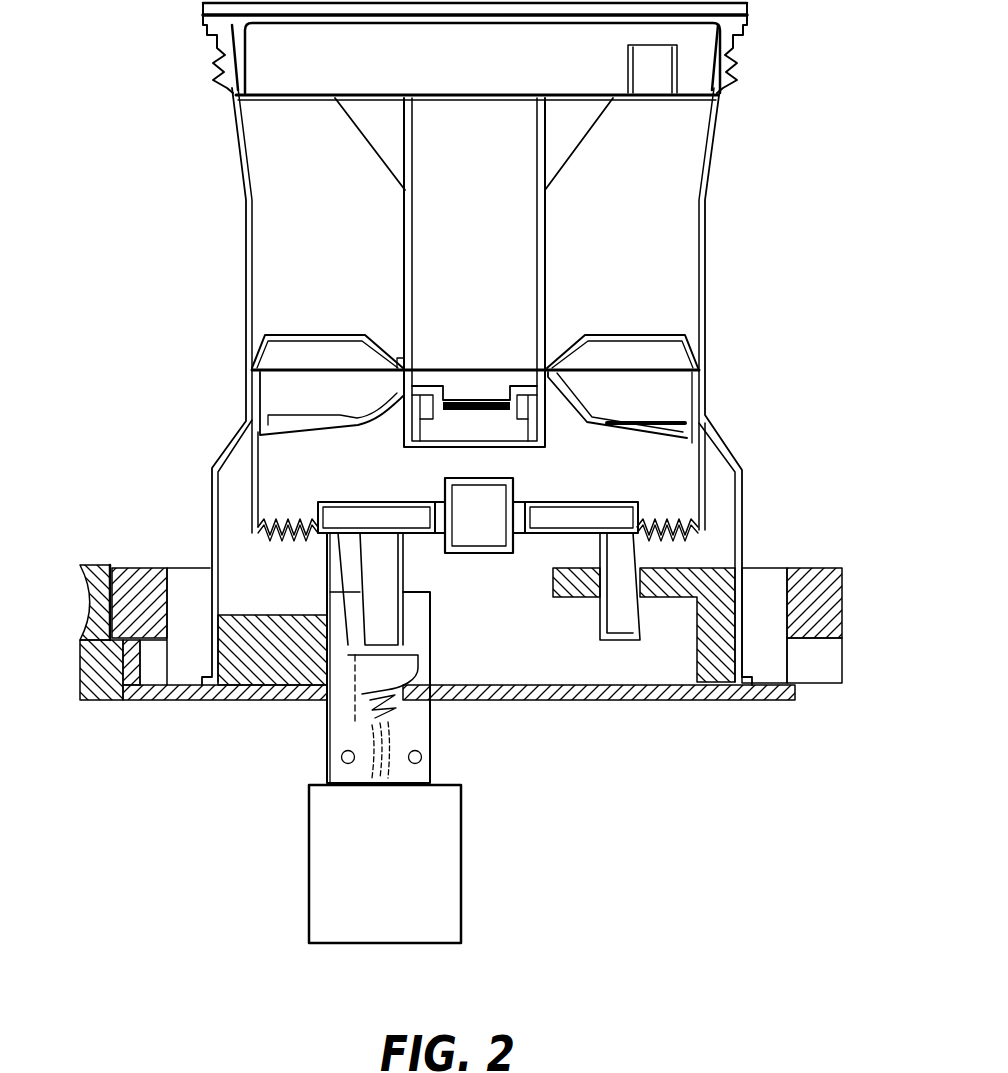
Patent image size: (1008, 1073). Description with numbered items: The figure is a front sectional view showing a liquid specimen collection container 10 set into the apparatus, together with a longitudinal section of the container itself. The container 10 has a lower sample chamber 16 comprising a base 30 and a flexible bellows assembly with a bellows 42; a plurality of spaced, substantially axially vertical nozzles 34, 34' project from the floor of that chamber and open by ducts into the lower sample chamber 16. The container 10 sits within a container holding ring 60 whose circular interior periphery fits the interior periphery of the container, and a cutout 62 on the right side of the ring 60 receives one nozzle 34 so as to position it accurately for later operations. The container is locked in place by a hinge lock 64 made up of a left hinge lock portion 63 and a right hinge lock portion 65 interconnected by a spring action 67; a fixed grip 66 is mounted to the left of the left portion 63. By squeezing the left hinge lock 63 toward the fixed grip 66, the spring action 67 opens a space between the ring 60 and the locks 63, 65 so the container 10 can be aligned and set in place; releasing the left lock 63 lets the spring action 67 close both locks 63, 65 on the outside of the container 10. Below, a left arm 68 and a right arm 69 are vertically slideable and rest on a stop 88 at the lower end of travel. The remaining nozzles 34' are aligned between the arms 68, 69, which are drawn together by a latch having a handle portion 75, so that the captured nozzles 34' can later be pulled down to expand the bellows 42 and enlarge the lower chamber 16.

The liquid specimen collection container 10 is at (222, 237).
The lower sample chamber 16 is at (622, 452).
The base 30 is at (743, 507).
The bellows 42 is at (670, 523).
The handle portion 75 is at (327, 552).
The nozzle 34 is at (664, 649).
The captured nozzle 34' is at (438, 646).
The container holding ring 60 is at (263, 663).
The cutout 62 is at (628, 566).
The left hinge lock portion 63 is at (137, 565).
The hinge lock 64 is at (820, 662).
The right hinge lock portion 65 is at (835, 602).
The fixed grip 66 is at (93, 608).
The spring action 67 is at (775, 658).
The left arm 68 is at (338, 737).
The right arm 69 is at (425, 738).
The stop 88 is at (309, 893).